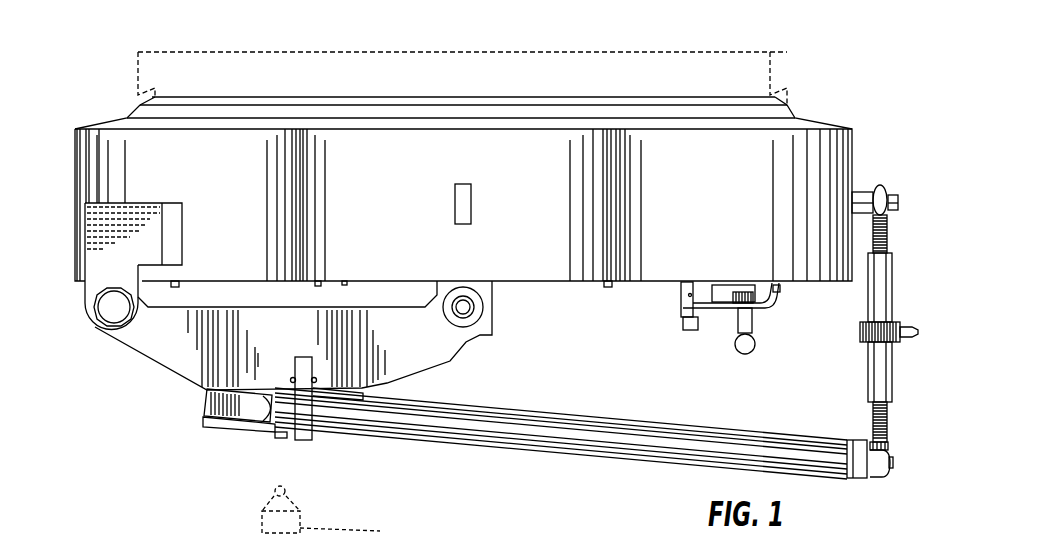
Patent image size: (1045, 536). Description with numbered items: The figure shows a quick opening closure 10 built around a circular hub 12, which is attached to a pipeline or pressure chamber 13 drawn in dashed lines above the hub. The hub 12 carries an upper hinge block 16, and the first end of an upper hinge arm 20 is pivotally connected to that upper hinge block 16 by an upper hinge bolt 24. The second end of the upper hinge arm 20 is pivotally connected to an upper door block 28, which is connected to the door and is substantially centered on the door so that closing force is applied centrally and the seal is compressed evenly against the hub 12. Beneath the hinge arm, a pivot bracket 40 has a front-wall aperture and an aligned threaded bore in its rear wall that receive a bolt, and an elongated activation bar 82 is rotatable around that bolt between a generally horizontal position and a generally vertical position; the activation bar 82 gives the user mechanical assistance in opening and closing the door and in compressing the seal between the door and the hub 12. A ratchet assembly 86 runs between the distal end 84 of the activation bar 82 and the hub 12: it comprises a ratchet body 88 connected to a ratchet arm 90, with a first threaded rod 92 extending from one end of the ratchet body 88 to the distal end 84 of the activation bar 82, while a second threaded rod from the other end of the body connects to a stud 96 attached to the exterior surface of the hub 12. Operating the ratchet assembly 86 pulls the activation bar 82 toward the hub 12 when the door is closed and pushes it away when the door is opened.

The quick opening closure 10 is at (120, 108).
The circular hub 12 is at (845, 147).
The pipeline or pressure chamber 13 is at (613, 60).
The upper hinge block 16 is at (93, 263).
The upper hinge arm 20 is at (152, 367).
The upper hinge bolt 24 is at (100, 309).
The upper door block 28 is at (480, 318).
The pivot bracket 40 is at (234, 435).
The activation bar 82 is at (555, 448).
The distal end of the activation bar 84 is at (868, 470).
The ratchet assembly 86 is at (855, 351).
The ratchet body 88 is at (890, 292).
The ratchet arm 90 is at (890, 350).
The first threaded rod 92 is at (873, 422).
The stud 96 is at (862, 182).